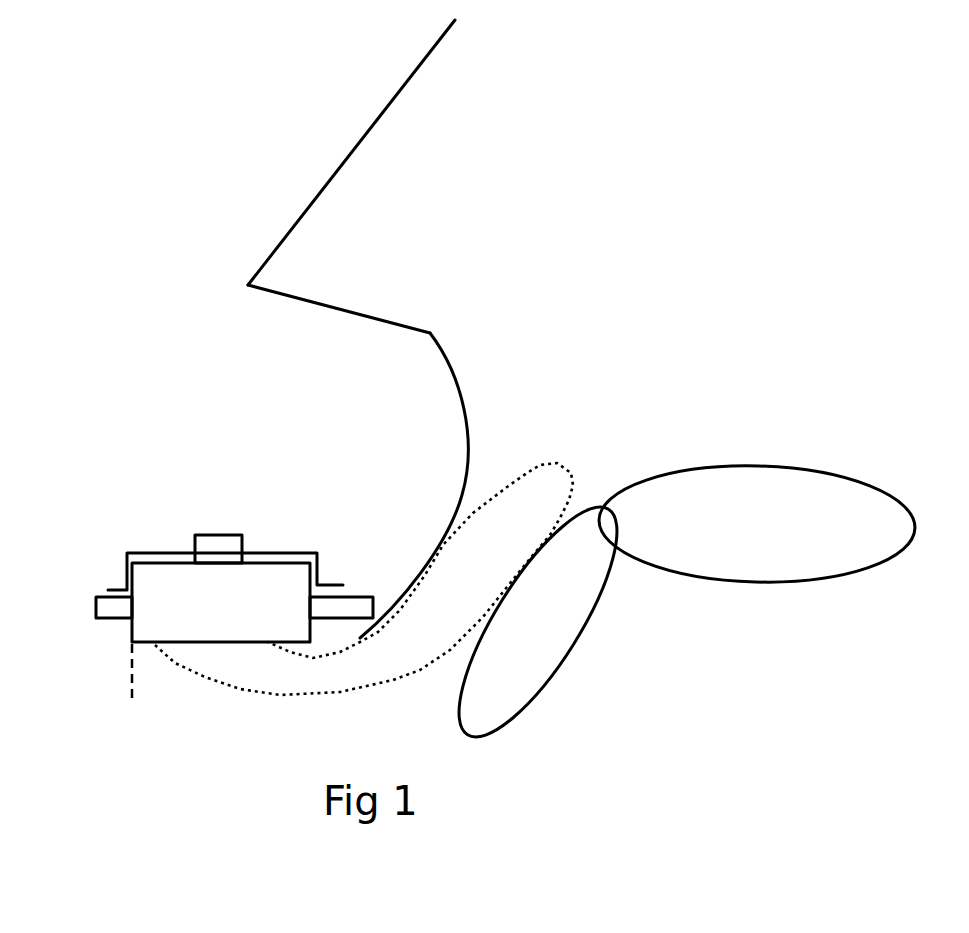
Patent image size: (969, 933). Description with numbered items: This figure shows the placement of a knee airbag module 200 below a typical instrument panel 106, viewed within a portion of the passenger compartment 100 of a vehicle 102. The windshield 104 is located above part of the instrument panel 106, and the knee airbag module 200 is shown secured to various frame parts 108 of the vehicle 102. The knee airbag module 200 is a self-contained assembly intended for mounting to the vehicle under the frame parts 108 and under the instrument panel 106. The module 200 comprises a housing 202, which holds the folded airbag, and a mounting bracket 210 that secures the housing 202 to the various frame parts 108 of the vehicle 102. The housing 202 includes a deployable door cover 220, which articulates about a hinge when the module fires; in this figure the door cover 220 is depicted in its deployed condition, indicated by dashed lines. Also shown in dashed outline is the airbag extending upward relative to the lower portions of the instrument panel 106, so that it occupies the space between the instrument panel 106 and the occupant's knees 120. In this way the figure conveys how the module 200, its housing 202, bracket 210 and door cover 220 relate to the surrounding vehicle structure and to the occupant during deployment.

The passenger compartment 100 is at (333, 268).
The vehicle 102 is at (570, 78).
The windshield 104 is at (352, 147).
The instrument panel 106 is at (457, 365).
The frame parts 108 is at (102, 610).
The occupant's knees 120 is at (670, 492).
The knee airbag module 200 is at (230, 583).
The housing 202 is at (515, 522).
The mounting bracket 210 is at (157, 552).
The door cover 220 is at (125, 667).